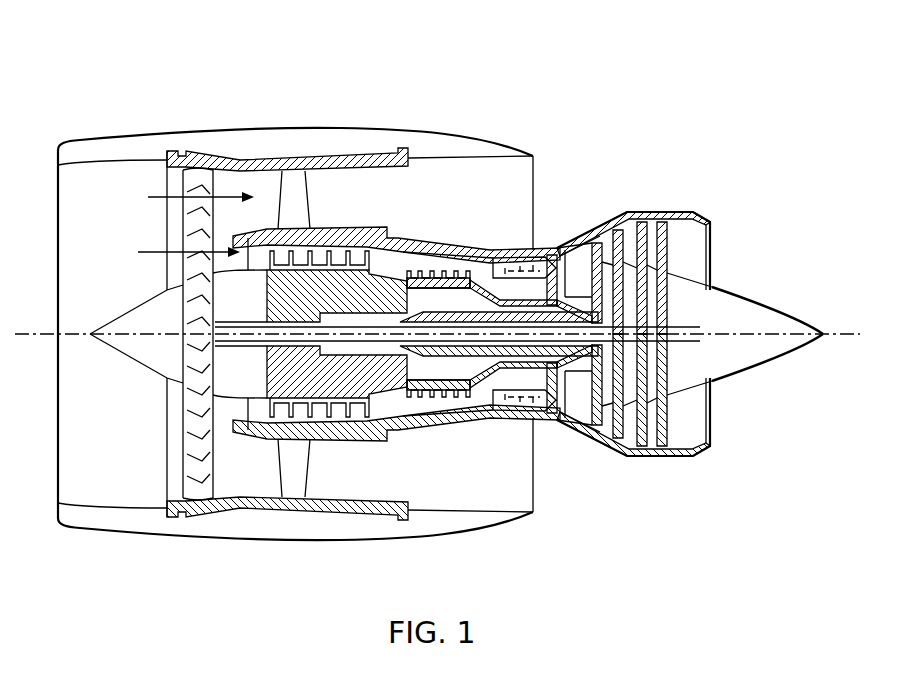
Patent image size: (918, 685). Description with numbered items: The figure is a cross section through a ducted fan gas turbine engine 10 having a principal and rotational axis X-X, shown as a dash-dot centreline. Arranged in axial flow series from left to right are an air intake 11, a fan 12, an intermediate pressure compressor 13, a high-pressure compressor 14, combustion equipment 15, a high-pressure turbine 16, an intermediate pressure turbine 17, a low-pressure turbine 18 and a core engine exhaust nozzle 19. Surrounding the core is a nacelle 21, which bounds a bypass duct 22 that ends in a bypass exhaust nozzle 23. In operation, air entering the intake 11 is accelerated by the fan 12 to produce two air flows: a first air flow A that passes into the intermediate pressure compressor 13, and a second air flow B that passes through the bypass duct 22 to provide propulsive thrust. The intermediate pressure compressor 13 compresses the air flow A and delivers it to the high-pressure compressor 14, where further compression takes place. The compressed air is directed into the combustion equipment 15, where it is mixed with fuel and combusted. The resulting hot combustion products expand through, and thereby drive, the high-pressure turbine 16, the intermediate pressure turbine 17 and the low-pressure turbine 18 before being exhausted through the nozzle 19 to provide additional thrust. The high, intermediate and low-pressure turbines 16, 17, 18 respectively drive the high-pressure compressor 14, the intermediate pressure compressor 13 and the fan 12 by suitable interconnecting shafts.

The ducted fan gas turbine engine 10 is at (104, 92).
The air intake 11 is at (110, 163).
The fan 12 is at (196, 466).
The intermediate pressure compressor 13 is at (329, 420).
The high-pressure compressor 14 is at (460, 264).
The combustion equipment 15 is at (495, 412).
The high-pressure turbine 16 is at (555, 432).
The intermediate pressure turbine 17 is at (598, 240).
The low-pressure turbine 18 is at (610, 445).
The core engine exhaust nozzle 19 is at (700, 217).
The nacelle 21 is at (337, 148).
The bypass duct 22 is at (490, 203).
The bypass exhaust nozzle 23 is at (534, 158).